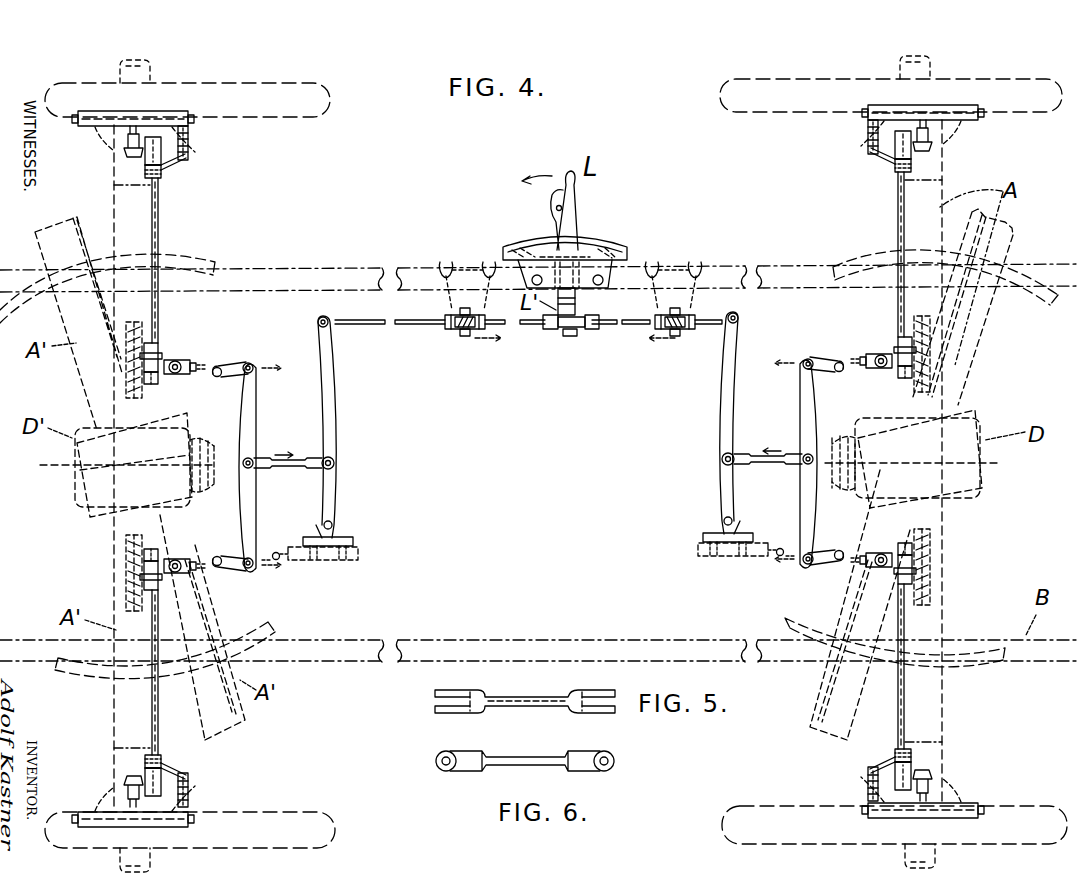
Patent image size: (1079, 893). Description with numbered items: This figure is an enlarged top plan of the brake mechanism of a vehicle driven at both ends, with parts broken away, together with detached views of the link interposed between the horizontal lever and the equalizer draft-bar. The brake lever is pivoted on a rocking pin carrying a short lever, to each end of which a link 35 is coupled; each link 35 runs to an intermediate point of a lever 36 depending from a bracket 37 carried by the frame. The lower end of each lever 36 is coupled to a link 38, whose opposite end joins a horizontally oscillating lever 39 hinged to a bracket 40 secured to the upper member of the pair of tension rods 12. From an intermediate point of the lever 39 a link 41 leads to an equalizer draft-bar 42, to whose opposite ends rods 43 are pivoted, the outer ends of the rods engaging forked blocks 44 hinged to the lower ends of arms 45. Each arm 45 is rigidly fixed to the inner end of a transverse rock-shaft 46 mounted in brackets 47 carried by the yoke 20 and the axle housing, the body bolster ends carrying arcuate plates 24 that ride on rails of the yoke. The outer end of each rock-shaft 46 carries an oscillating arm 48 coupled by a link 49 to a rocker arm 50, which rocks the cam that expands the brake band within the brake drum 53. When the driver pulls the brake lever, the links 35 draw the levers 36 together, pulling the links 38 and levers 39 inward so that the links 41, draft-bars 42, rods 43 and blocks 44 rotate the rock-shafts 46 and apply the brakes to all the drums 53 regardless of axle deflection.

In FIG. 4, the tension rods 12 is at (356, 564).
In FIG. 4, the yoke 20 is at (128, 330).
In FIG. 4, the arcuate plates 24 is at (202, 262).
In FIG. 4, the link 35 is at (525, 326).
In FIG. 4, the lever 36 is at (452, 331).
In FIG. 4, the bracket 37 is at (447, 262).
In FIG. 4, the link 38 is at (370, 326).
In FIG. 4, the horizontally oscillating lever 39 is at (338, 434).
In FIG. 4, the bracket 40 is at (345, 522).
In FIG. 4, the link 41 is at (292, 469).
In FIG. 5, the link 41 is at (508, 702).
In FIG. 6, the link 41 is at (515, 752).
In FIG. 4, the equalizer draft-bar 42 is at (256, 396).
In FIG. 4, the rods 43 is at (219, 367).
In FIG. 4, the forked blocks 44 is at (185, 352).
In FIG. 4, the arm 45 is at (158, 384).
In FIG. 4, the rock-shaft 46 is at (158, 236).
In FIG. 4, the brackets 47 is at (148, 158).
In FIG. 4, the oscillating arm 48 is at (161, 176).
In FIG. 4, the link 49 is at (175, 164).
In FIG. 4, the rocker arm 50 is at (188, 150).
In FIG. 4, the brake drum 53 is at (975, 107).